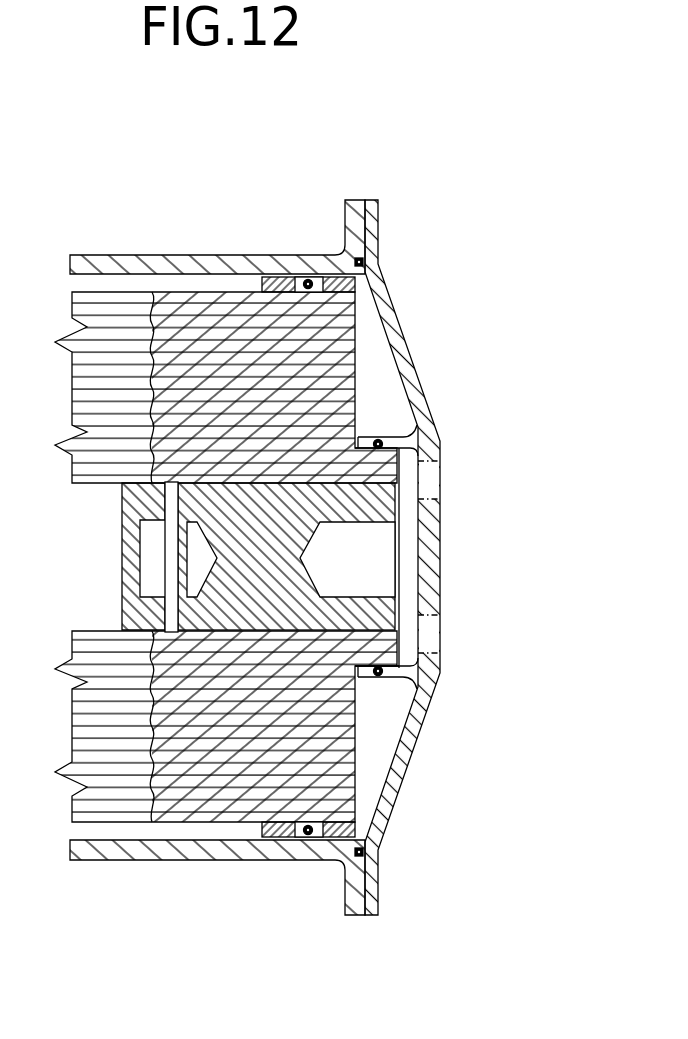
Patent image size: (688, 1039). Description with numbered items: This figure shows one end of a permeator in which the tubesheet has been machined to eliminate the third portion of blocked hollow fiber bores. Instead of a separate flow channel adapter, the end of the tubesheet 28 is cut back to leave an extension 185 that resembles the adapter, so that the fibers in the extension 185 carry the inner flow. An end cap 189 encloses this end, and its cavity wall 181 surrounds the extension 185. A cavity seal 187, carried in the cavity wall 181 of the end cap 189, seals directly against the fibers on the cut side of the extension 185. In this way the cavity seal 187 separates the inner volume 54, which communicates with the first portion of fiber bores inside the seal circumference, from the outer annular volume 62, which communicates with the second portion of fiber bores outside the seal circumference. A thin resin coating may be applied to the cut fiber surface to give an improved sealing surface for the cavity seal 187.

The tubesheet 28 is at (220, 823).
The outer annular volume 62 is at (367, 337).
The inner volume 54 is at (410, 560).
The cavity wall 181 is at (392, 433).
The extension 185 is at (418, 674).
The cavity seal 187 is at (385, 682).
The end cap 189 is at (388, 828).